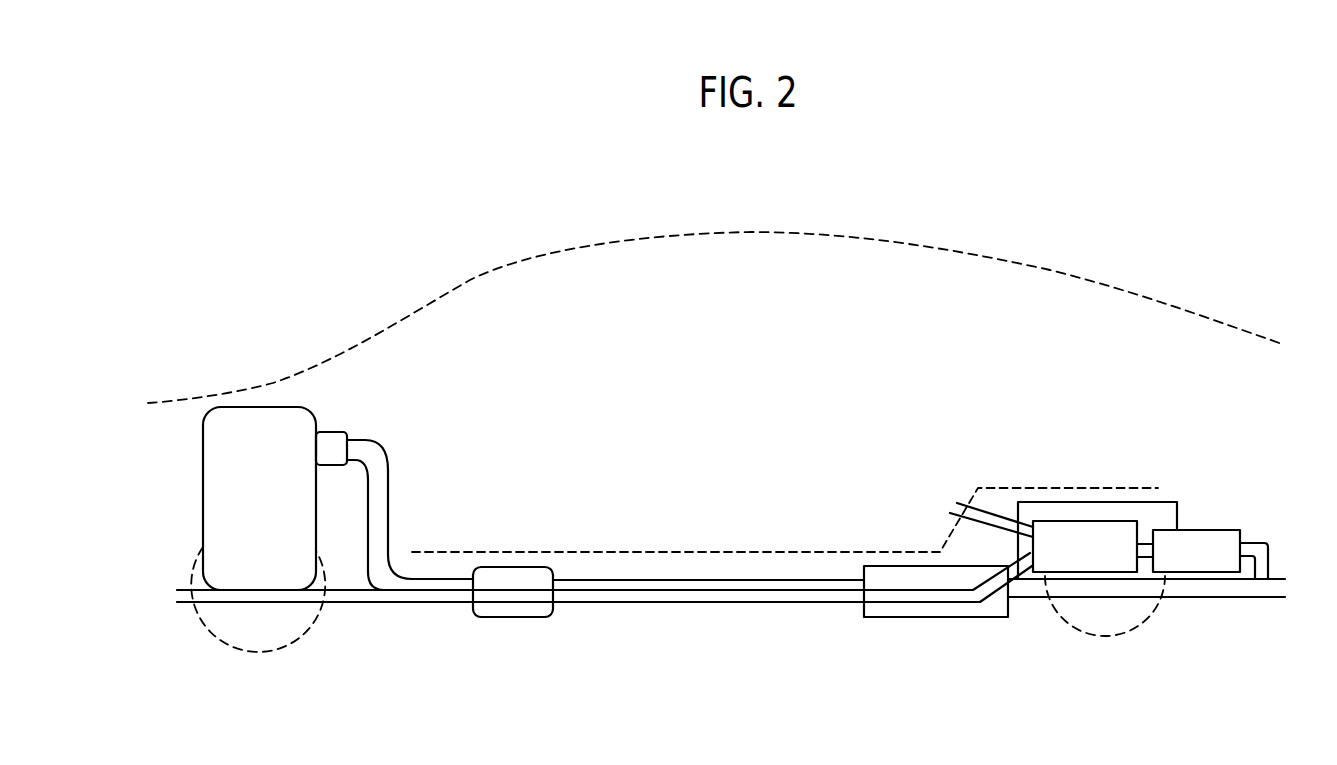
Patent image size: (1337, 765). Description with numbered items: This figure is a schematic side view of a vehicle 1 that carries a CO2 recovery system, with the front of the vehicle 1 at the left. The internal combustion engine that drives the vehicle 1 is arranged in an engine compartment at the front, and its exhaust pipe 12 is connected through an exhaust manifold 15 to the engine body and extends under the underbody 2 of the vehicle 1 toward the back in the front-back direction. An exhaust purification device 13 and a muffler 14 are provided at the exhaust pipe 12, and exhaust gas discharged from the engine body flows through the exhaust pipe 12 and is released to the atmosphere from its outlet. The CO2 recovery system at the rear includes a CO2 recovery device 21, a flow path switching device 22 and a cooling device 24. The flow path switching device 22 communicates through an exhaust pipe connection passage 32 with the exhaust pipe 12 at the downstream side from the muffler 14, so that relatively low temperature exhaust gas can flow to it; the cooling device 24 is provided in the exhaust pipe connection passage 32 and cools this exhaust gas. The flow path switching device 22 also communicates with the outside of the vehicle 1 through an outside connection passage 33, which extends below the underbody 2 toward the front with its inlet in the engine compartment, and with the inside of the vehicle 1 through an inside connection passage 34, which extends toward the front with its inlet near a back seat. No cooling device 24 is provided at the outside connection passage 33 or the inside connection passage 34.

The vehicle 1 is at (1189, 308).
The underbody 2 is at (707, 552).
The exhaust pipe 12 is at (256, 407).
The exhaust purification device 13 is at (522, 567).
The muffler 14 is at (882, 566).
The exhaust manifold 15 is at (340, 432).
The CO2 recovery device 21 is at (1050, 502).
The flow path switching device 22 is at (1095, 521).
The cooling device 24 is at (1198, 530).
The exhaust pipe connection passage 32 is at (1262, 543).
The outside connection passage 33 is at (655, 603).
The inside connection passage 34 is at (1002, 505).